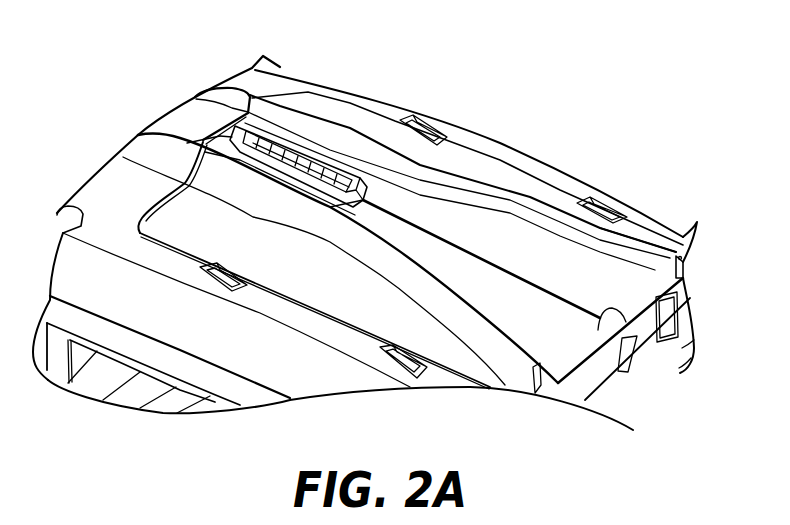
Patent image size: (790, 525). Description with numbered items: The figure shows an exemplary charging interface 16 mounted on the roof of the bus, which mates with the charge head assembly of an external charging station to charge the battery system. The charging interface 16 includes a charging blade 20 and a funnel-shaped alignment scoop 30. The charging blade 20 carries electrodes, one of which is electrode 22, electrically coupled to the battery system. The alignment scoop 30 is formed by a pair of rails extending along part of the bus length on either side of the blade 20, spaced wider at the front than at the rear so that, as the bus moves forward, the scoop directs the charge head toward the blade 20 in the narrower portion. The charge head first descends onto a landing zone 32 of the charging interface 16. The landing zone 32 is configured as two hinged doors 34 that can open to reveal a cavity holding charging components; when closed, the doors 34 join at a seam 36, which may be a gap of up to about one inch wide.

The charging interface 16 is at (458, 86).
The charging blade 20 is at (340, 172).
The electrode 22 is at (250, 153).
The alignment scoop 30 is at (533, 213).
The landing zone 32 is at (612, 287).
The hinged doors 34 is at (585, 283).
The seam 36 is at (626, 322).